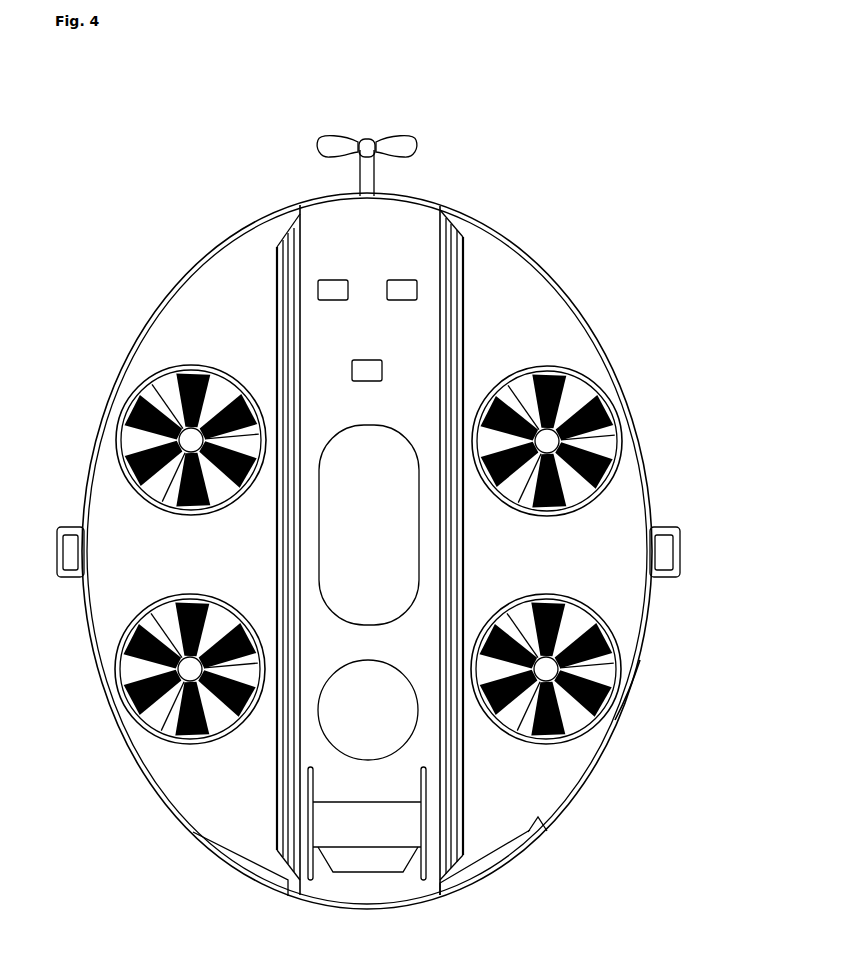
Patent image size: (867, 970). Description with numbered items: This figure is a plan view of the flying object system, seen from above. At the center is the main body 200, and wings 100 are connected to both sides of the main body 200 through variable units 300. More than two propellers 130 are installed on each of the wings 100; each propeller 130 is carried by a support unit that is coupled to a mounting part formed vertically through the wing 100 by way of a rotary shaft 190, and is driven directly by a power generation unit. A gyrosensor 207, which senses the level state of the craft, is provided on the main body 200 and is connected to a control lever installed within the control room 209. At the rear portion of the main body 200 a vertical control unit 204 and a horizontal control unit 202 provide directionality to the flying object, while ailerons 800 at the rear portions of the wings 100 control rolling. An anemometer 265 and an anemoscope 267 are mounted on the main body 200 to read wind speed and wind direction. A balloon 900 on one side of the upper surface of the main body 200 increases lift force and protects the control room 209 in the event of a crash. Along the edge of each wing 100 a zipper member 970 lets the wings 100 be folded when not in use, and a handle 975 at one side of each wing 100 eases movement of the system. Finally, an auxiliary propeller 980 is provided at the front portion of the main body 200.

The wing 100 is at (233, 278).
The propeller 130 is at (154, 439).
The rotary shaft 190 is at (157, 429).
The main body 200 is at (318, 220).
The horizontal control unit 202 is at (433, 828).
The vertical control unit 204 is at (366, 836).
The gyrosensor 207 is at (352, 371).
The control room 209 is at (377, 452).
The anemometer 265 is at (333, 280).
The anemoscope 267 is at (402, 280).
The variable unit 300 is at (451, 225).
The aileron 800 is at (545, 830).
The balloon 900 is at (345, 722).
The zipper member 970 is at (630, 690).
The handle 975 is at (681, 551).
The auxiliary propeller 980 is at (347, 137).